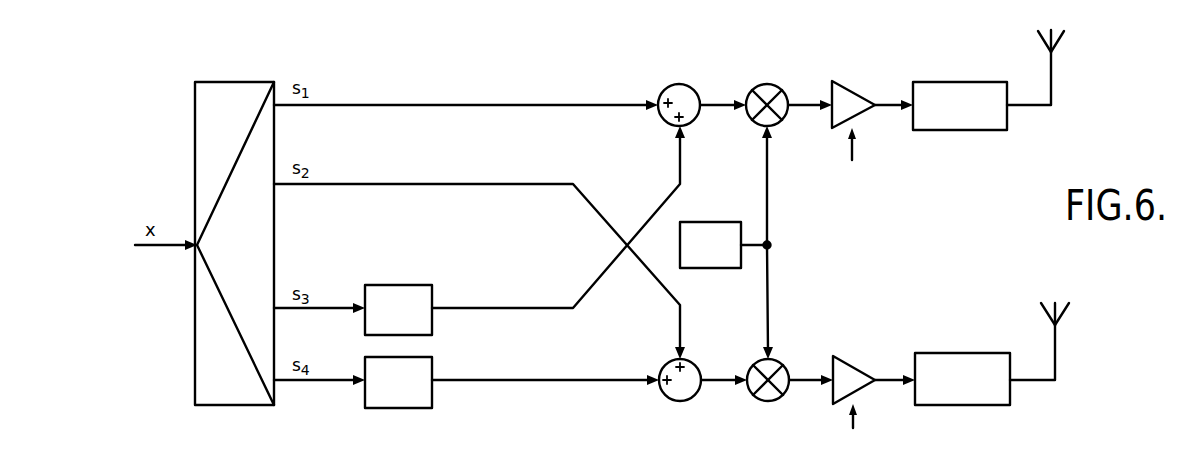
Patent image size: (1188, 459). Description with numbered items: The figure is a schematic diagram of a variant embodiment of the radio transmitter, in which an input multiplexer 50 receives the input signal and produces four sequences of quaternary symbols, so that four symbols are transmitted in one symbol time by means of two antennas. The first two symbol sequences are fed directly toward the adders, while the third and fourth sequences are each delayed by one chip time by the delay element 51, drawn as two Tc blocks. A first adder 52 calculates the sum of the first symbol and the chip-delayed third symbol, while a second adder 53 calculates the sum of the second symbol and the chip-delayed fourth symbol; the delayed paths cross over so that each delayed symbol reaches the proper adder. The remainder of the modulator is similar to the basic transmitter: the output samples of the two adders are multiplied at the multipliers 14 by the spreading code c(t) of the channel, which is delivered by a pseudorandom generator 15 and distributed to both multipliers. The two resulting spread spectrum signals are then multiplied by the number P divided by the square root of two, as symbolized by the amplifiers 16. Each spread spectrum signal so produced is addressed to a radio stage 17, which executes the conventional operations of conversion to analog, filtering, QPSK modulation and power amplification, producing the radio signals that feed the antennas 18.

The input multiplexer 50 is at (195, 140).
The delay element 51 is at (432, 325).
The first adder 52 is at (663, 90).
The second adder 53 is at (667, 398).
The multiplier 14 is at (750, 90).
The pseudorandom generator 15 is at (713, 222).
The amplifier 16 is at (848, 82).
The radio stage 17 is at (962, 130).
The antenna 18 is at (1053, 80).